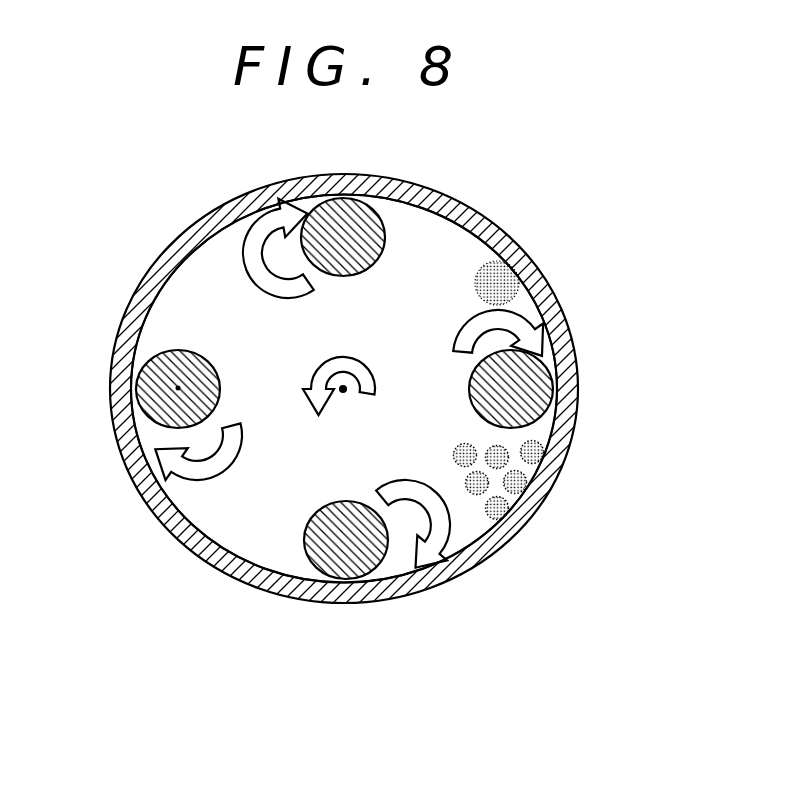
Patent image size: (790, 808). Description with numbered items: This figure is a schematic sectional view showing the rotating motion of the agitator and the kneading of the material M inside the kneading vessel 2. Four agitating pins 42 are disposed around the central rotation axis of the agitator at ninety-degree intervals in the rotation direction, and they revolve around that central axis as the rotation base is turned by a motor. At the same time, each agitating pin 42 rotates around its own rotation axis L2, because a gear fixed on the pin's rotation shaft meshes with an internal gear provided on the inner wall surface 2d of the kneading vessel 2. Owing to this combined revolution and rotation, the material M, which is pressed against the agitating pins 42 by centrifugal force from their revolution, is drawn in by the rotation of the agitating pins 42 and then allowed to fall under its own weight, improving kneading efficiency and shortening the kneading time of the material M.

The kneading vessel 2 is at (522, 222).
The inner wall surface of the kneading vessel 2d is at (228, 545).
The agitating pin 42 is at (383, 227).
The rotation axis of the agitating pin L2 is at (178, 388).
The material M is at (510, 278).